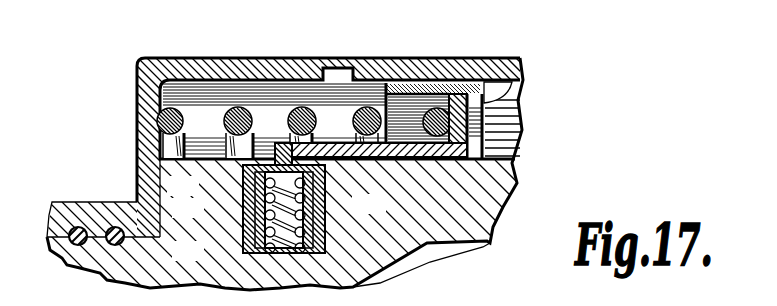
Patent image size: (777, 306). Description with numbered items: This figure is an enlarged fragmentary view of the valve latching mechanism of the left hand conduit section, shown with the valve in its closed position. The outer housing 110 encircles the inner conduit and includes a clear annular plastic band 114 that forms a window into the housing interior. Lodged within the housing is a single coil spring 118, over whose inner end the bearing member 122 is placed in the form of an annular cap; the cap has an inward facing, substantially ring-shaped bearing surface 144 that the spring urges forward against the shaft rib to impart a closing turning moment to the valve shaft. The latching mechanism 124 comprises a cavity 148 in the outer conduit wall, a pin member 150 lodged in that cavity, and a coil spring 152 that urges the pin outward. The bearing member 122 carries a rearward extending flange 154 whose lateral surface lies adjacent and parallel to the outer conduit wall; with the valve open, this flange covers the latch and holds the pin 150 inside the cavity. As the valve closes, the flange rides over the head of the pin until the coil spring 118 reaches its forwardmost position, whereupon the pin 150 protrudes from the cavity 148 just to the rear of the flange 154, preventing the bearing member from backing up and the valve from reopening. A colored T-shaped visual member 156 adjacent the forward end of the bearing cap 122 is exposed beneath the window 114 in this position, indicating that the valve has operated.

The outer housing 110 is at (198, 15).
The clear annular plastic band 114 is at (378, 58).
The coil spring 118 is at (240, 107).
The bearing member 122 is at (457, 167).
The latching mechanism 124 is at (246, 202).
The bearing surface 144 is at (483, 110).
The cavity 148 is at (327, 204).
The pin member 150 is at (247, 184).
The coil spring 152 is at (253, 243).
The rearward extending flange 154 is at (436, 192).
The T-shaped visual member 156 is at (428, 74).